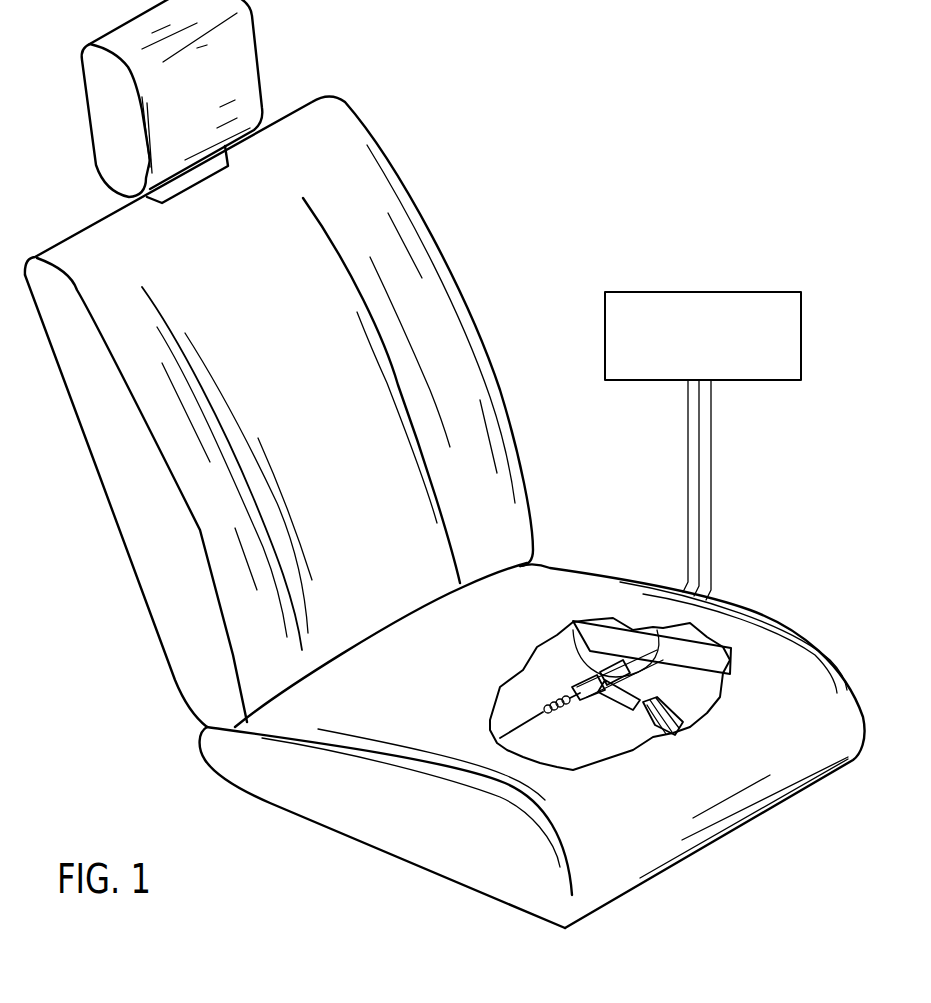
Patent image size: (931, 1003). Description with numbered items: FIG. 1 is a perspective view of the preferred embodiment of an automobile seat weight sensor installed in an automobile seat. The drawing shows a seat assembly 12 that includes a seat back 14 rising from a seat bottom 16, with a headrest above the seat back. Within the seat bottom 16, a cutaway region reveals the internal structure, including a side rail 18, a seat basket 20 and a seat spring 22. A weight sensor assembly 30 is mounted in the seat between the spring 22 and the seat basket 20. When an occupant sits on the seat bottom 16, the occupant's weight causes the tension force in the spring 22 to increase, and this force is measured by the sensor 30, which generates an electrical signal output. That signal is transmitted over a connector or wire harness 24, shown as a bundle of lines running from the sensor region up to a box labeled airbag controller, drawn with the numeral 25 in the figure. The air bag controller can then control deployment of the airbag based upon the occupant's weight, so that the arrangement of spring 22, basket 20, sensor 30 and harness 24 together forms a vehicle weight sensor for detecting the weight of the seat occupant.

The seat assembly 12 is at (501, 234).
The seat back 14 is at (457, 292).
The seat bottom 16 is at (393, 820).
The side rail 18 is at (687, 647).
The seat basket 20 is at (663, 650).
The seat spring 22 is at (557, 714).
The wire harness 24 is at (718, 668).
The airbag controller 25 is at (698, 292).
The weight sensor assembly 30 is at (573, 630).